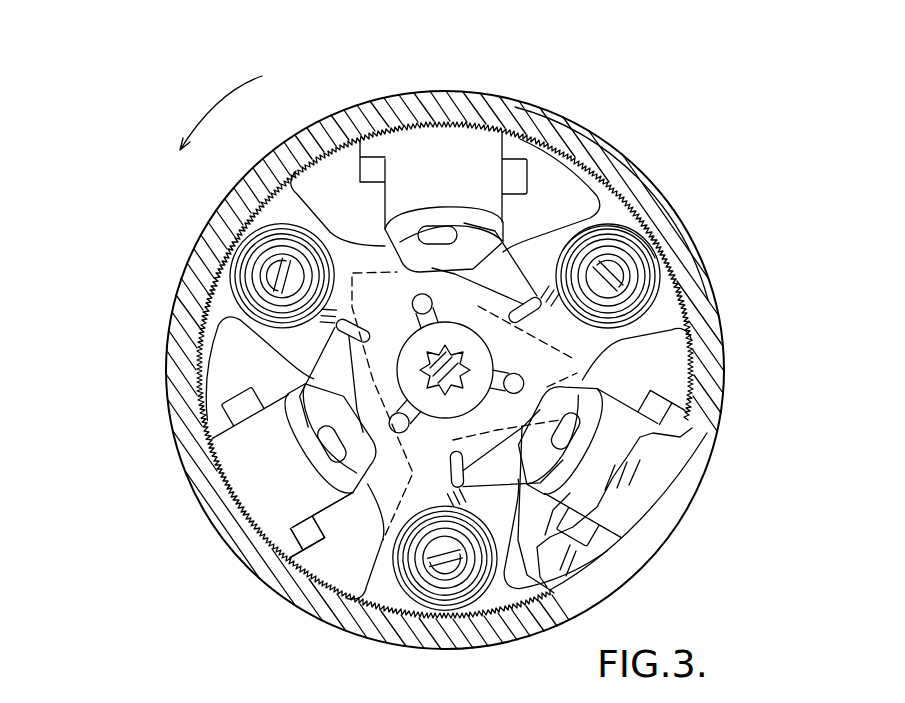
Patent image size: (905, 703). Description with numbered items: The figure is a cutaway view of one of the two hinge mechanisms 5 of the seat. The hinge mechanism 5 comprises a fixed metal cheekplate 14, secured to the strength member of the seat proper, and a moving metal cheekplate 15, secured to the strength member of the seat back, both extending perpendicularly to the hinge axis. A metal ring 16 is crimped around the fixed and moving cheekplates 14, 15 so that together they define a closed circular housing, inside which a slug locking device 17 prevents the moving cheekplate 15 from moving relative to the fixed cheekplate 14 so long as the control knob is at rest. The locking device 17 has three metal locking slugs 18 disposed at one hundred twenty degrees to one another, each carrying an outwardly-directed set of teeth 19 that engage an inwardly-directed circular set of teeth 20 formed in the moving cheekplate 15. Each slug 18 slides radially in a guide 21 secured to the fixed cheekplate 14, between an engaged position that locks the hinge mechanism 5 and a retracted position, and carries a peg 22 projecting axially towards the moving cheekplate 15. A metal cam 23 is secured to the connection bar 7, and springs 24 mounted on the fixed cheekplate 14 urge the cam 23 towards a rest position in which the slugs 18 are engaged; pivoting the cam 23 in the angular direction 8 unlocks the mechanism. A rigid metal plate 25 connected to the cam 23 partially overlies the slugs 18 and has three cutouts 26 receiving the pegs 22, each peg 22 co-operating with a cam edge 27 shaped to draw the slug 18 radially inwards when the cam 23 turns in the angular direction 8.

The hinge mechanism 5 is at (604, 107).
The connection bar 7 is at (453, 367).
The angular direction 8 is at (242, 96).
The fixed cheekplate 14 is at (608, 207).
The moving cheekplate 15 is at (256, 170).
The metal ring 16 is at (682, 475).
The slug locking device 17 is at (613, 218).
The locking slug 18 is at (448, 157).
The set of teeth 19 is at (372, 135).
The circular set of teeth 20 is at (685, 333).
The guide 21 is at (447, 305).
The peg 22 is at (434, 234).
The cam 23 is at (353, 580).
The spring 24 is at (650, 235).
The rigid metal plate 25 is at (380, 398).
The cutout 26 is at (337, 378).
The cam edge 27 is at (474, 221).